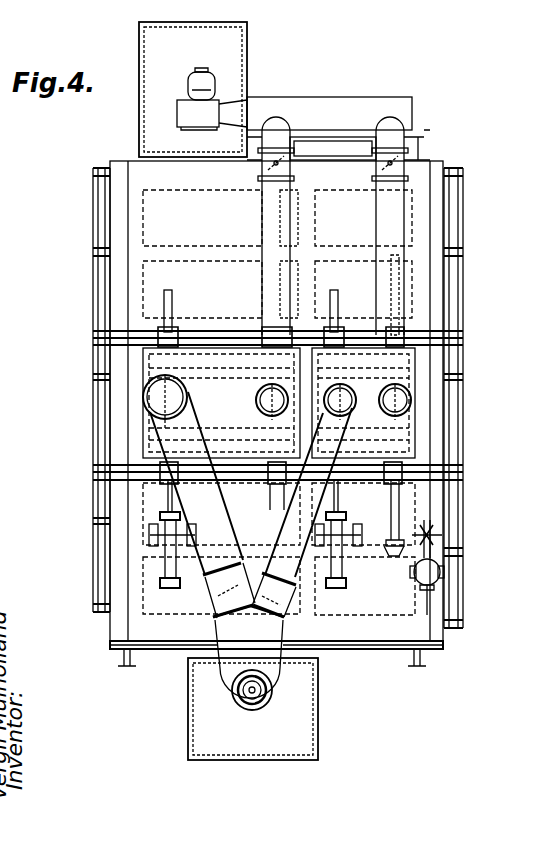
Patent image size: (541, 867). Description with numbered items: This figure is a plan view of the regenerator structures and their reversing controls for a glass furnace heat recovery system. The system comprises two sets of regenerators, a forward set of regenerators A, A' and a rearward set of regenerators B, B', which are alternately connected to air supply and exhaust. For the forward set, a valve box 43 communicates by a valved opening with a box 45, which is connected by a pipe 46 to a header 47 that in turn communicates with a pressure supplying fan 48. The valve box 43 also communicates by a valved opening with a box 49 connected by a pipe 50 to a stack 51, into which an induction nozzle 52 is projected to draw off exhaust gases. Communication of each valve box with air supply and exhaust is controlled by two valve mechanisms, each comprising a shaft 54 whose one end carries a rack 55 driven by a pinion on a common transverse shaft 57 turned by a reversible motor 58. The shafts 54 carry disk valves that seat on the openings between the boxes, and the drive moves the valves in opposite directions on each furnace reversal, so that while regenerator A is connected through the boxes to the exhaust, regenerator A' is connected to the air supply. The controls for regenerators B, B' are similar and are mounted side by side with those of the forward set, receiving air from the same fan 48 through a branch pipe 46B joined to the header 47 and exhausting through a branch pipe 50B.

The valve box 43 is at (418, 362).
The box 45 is at (420, 424).
The pipe 46 is at (389, 206).
The branch pipe 46B is at (262, 210).
The header 47 is at (353, 102).
The pressure supplying fan 48 is at (174, 106).
The box 49 is at (331, 413).
The pipe 50 is at (293, 566).
The branch pipe 50B is at (218, 528).
The stack 51 is at (290, 690).
The induction nozzle 52 is at (240, 690).
The shaft 54 is at (160, 503).
The rack 55 is at (174, 560).
The transverse shaft 57 is at (364, 538).
The reversible motor 58 is at (433, 572).
The regenerator A is at (398, 231).
The regenerator B is at (155, 254).
The regenerator A' is at (458, 614).
The regenerator B' is at (120, 634).